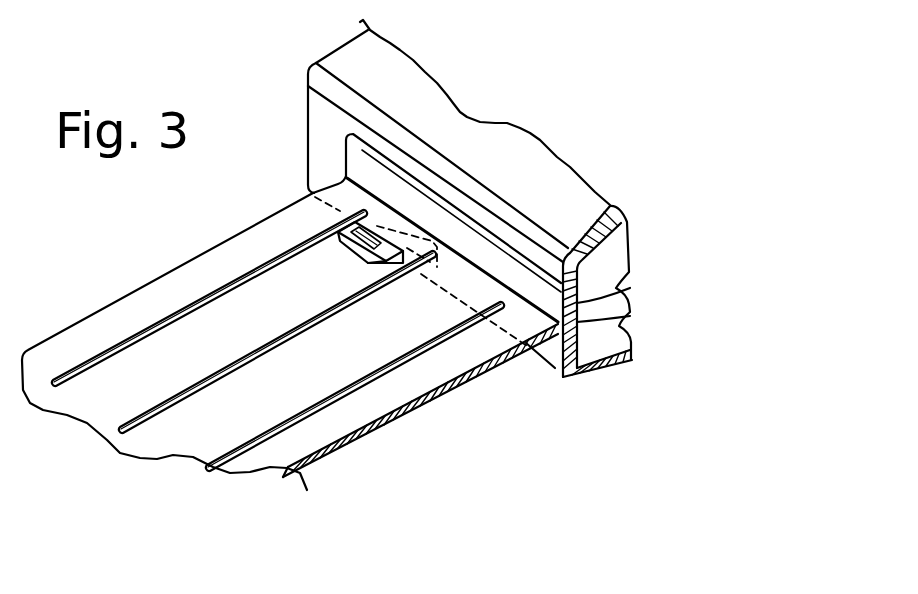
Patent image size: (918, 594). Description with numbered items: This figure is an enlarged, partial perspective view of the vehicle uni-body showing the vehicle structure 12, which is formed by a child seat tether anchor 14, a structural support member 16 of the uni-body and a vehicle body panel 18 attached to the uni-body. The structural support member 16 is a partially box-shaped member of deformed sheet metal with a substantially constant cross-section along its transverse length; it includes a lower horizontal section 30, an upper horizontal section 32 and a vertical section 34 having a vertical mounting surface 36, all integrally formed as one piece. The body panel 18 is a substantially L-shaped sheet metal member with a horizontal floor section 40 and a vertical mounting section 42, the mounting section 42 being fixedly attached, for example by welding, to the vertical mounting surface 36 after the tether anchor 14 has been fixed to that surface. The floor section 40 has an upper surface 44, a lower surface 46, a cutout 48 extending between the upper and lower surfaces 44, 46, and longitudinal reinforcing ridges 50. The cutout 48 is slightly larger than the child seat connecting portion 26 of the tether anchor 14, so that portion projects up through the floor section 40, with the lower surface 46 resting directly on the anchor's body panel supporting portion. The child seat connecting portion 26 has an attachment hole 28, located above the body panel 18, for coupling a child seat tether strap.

The vehicle structure 12 is at (505, 86).
The child seat tether anchor 14 is at (340, 258).
The structural support member 16 is at (527, 155).
The vehicle body panel 18 is at (120, 293).
The child seat connecting portion 26 is at (383, 258).
The attachment hole 28 is at (345, 213).
The lower horizontal section 30 is at (600, 371).
The upper horizontal section 32 is at (602, 208).
The vertical section 34 is at (632, 316).
The vertical mounting surface 36 is at (550, 352).
The horizontal floor section 40 is at (328, 457).
The vertical mounting section 42 is at (629, 273).
The upper surface 44 is at (193, 437).
The lower surface 46 is at (373, 431).
The cutout 48 is at (366, 226).
The longitudinal reinforcing ridge 50 is at (242, 364).